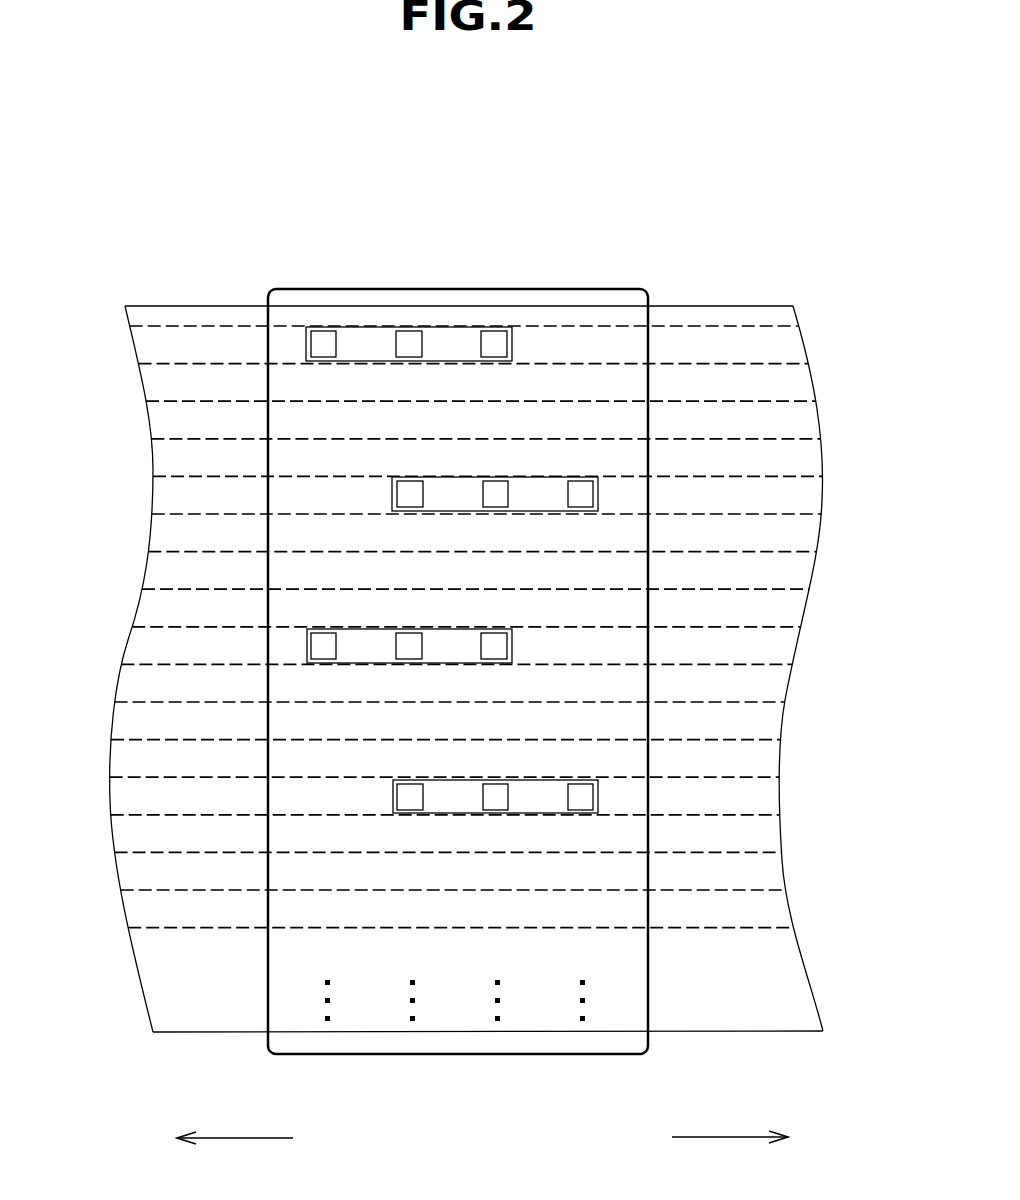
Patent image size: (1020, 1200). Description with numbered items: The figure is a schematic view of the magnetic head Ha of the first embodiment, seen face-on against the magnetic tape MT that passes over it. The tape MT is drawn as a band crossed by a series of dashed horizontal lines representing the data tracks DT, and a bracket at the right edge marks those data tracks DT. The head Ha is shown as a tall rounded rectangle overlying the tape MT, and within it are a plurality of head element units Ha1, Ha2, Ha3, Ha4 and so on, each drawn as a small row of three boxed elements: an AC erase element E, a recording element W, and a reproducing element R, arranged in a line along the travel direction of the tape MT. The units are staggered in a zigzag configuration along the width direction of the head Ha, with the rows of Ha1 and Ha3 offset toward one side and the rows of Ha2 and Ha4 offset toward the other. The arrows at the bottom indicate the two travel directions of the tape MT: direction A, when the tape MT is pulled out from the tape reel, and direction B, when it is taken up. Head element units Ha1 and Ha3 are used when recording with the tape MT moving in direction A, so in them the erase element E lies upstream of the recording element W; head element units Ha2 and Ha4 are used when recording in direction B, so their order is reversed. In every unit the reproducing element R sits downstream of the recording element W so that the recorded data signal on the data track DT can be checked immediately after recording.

The magnetic tape MT is at (724, 306).
The data track DT is at (795, 343).
The magnetic head Ha is at (459, 287).
The head element unit Ha1 is at (306, 347).
The head element unit Ha2 is at (392, 491).
The head element unit Ha3 is at (307, 645).
The head element unit Ha4 is at (393, 792).
The travel direction of the magnetic tape A is at (730, 1156).
The travel direction of the magnetic tape B is at (235, 1157).